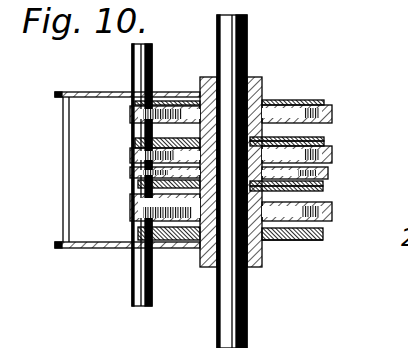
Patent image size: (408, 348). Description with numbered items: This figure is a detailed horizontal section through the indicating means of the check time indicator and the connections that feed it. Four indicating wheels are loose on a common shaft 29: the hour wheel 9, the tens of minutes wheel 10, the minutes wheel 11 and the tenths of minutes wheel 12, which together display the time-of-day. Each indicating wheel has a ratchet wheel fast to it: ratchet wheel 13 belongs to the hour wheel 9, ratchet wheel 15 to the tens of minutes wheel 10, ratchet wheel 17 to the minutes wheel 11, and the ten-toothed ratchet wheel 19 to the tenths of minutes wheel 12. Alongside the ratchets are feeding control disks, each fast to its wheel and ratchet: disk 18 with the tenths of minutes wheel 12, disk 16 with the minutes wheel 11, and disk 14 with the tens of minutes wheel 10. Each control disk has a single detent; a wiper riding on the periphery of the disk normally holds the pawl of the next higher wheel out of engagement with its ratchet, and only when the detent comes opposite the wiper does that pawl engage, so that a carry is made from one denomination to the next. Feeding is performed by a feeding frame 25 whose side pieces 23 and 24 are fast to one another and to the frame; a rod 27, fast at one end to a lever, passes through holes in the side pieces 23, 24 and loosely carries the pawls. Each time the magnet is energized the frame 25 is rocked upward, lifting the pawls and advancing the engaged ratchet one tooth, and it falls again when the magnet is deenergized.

The hour wheel 9 is at (327, 107).
The tens of minutes wheel 10 is at (332, 157).
The minutes wheel 11 is at (330, 172).
The tenths of minutes wheel 12 is at (331, 213).
The ratchet wheel 13 is at (299, 100).
The feeding control disk 14 is at (326, 139).
The ratchet wheel 15 is at (327, 145).
The feeding control disk 16 is at (324, 185).
The ratchet wheel 17 is at (328, 191).
The feeding control disk 18 is at (326, 234).
The ratchet wheel 19 is at (318, 240).
The side piece 23 is at (97, 97).
The side piece 24 is at (96, 249).
The feeding frame 25 is at (63, 155).
The rod 27 is at (152, 296).
The shaft 29 is at (248, 38).